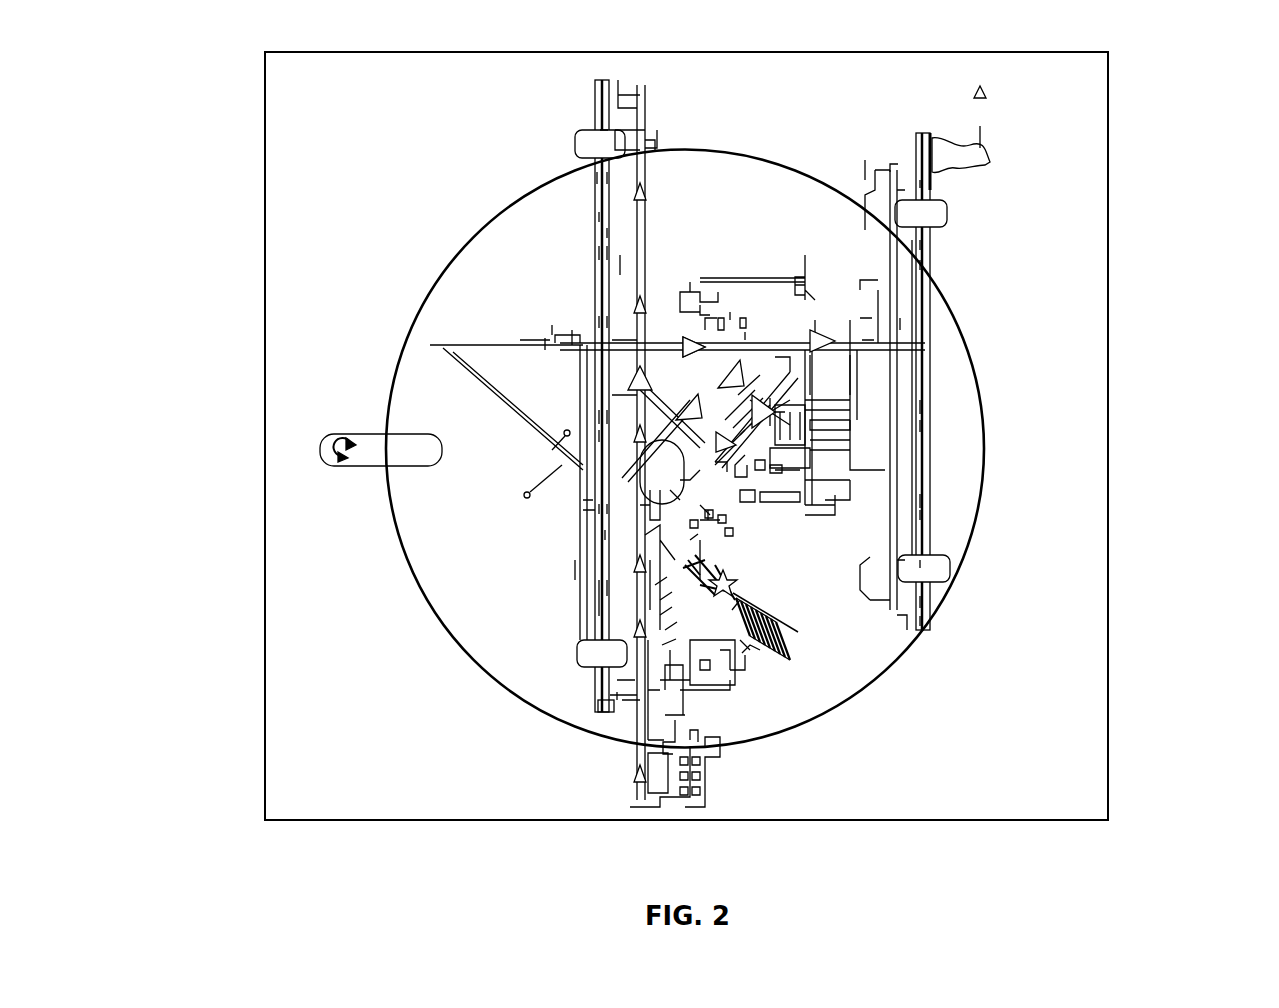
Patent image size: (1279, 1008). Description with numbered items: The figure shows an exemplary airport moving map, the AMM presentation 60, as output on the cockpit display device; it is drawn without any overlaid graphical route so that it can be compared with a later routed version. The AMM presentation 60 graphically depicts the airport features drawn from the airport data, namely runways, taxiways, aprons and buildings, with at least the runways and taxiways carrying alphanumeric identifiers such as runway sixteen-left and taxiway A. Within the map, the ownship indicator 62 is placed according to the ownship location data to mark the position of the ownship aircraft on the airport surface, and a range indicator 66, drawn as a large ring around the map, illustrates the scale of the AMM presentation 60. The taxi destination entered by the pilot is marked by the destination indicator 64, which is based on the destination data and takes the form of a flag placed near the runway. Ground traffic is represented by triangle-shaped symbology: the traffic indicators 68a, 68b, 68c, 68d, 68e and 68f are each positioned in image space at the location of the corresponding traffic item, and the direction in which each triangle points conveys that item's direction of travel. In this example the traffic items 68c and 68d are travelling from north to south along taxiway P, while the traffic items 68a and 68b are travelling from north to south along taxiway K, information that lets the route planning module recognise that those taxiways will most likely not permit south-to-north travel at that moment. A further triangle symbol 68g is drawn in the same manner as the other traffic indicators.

The AMM presentation 60 is at (228, 60).
The ownship indicator 62 is at (740, 562).
The destination indicator 64 is at (940, 190).
The range indicator 66 is at (895, 668).
The traffic indicator 68a is at (770, 412).
The traffic indicator 68b is at (718, 443).
The traffic indicator 68c is at (688, 409).
The traffic indicator 68d is at (730, 378).
The traffic indicator 68e is at (632, 384).
The traffic indicator 68f is at (700, 278).
The taxi route arrow indicator 68g is at (822, 300).